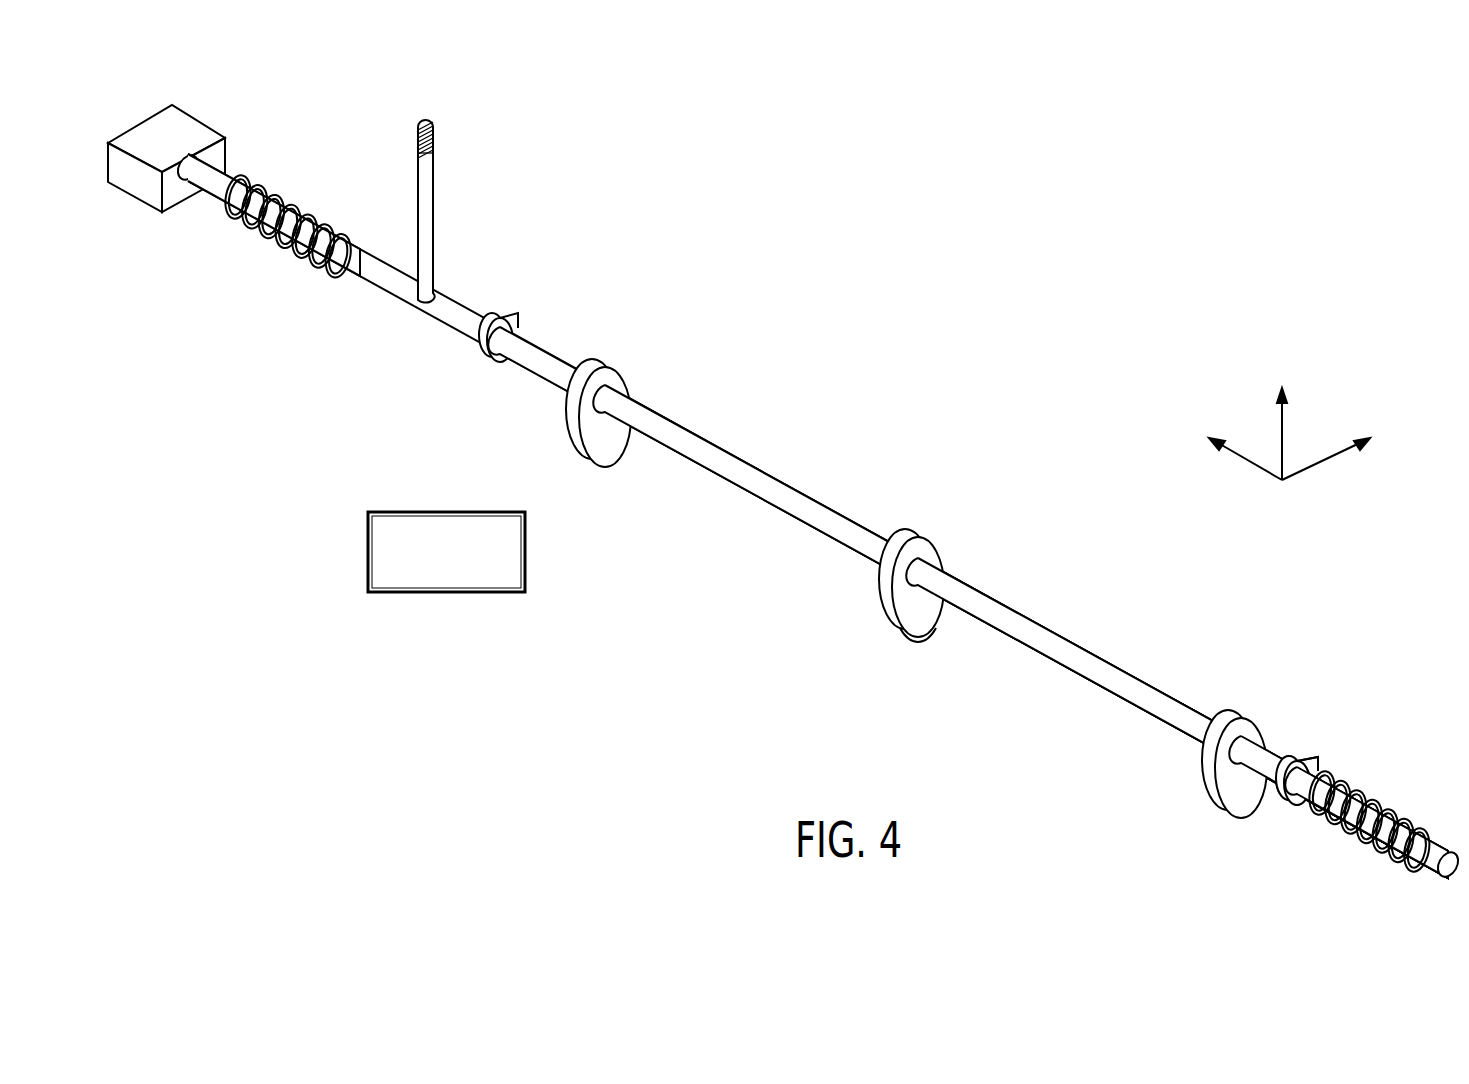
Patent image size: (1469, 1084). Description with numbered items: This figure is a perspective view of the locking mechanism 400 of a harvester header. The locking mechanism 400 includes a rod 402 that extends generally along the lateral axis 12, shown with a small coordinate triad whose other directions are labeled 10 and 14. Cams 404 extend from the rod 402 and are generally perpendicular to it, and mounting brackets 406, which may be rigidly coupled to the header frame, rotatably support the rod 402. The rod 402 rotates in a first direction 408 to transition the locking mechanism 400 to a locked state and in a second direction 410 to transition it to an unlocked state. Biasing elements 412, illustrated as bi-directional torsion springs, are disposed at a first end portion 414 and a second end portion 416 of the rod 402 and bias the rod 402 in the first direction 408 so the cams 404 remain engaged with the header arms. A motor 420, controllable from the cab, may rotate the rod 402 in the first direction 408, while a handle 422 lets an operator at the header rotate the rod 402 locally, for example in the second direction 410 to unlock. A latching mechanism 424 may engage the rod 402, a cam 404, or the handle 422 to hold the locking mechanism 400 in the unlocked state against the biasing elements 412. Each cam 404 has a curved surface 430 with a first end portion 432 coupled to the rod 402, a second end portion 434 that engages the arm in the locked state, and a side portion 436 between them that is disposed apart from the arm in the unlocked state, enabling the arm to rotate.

The locking mechanism 400 is at (1015, 232).
The rod 402 is at (1073, 645).
The cams 404 is at (1266, 704).
The mounting brackets 406 is at (503, 316).
The first direction 408 is at (760, 458).
The second direction 410 is at (738, 506).
The biasing elements 412 is at (273, 240).
The first end portion 414 is at (1423, 790).
The second end portion 416 is at (320, 194).
The motor 420 is at (205, 123).
The handle 422 is at (434, 168).
The latching mechanism 424 is at (367, 553).
The curved surface 430 is at (884, 573).
The first end portion 432 is at (937, 526).
The second end portion 434 is at (918, 658).
The side portion 436 is at (864, 615).
The first direction 10 is at (1325, 458).
The lateral axis 12 is at (1262, 470).
The third direction 14 is at (1280, 440).